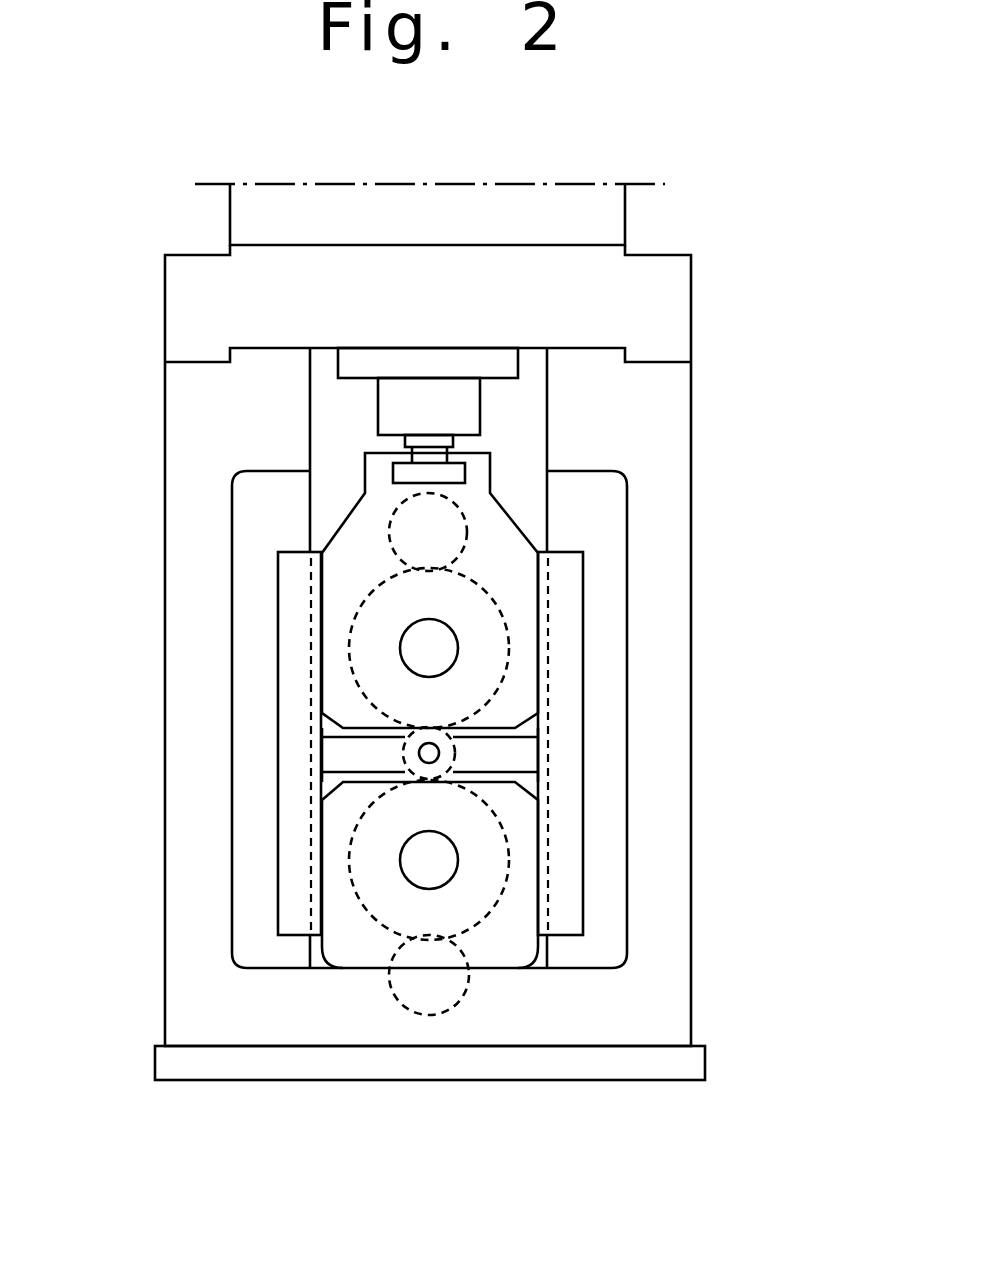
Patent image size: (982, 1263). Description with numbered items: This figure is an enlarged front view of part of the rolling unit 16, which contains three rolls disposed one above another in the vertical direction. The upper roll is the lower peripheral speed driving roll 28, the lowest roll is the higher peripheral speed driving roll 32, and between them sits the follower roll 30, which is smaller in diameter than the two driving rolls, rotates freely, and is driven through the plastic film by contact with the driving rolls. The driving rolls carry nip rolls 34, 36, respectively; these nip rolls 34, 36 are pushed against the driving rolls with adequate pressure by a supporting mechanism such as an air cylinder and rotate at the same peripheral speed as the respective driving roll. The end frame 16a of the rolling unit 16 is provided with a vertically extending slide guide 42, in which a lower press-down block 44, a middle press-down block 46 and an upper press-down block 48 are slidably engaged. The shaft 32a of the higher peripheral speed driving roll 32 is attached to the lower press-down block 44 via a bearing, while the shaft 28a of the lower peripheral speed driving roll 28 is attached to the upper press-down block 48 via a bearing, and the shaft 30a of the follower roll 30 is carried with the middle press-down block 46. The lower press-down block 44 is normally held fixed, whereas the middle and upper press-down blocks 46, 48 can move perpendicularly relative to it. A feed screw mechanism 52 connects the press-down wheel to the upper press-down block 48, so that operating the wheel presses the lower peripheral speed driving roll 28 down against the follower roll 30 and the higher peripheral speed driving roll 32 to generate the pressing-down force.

The rolling unit 16 is at (660, 280).
The end frame 16a is at (658, 412).
The lower peripheral speed driving roll 28 is at (487, 677).
The shaft of lower peripheral speed driving roll 28a is at (447, 637).
The follower roll 30 is at (457, 758).
The shaft of follower roll 30a is at (442, 752).
The higher peripheral speed driving roll 32 is at (498, 880).
The shaft of higher peripheral speed driving roll 32a is at (458, 845).
The nip roll 34 is at (450, 530).
The nip roll 36 is at (467, 985).
The slide guide 42 is at (290, 667).
The lower press-down block 44 is at (342, 956).
The middle press-down block 46 is at (340, 755).
The upper press-down block 48 is at (358, 540).
The feed screw mechanism 52 is at (403, 443).